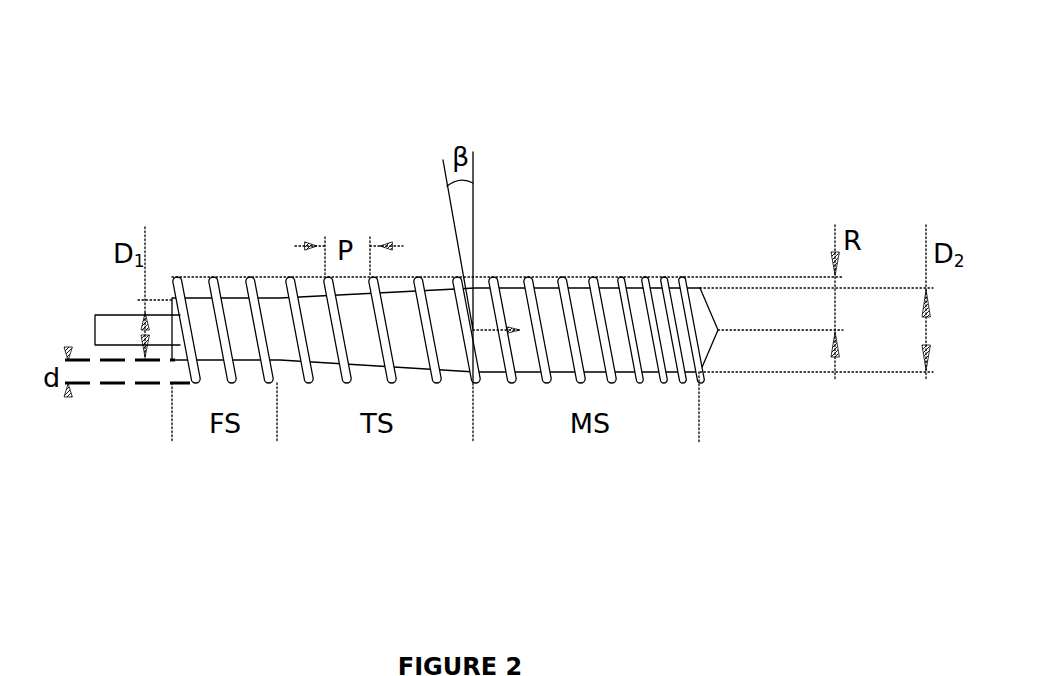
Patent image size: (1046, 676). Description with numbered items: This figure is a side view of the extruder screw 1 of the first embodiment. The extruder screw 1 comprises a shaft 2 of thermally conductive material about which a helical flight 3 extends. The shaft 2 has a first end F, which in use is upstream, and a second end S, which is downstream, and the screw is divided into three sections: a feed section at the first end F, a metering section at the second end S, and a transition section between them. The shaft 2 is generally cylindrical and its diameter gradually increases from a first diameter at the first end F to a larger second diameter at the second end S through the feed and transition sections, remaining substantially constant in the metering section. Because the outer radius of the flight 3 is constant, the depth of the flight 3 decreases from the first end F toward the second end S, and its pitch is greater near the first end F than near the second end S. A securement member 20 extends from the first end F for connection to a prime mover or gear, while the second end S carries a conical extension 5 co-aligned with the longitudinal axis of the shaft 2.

The extruder screw 1 is at (536, 260).
The shaft 2 is at (578, 300).
The helical flight 3 is at (283, 288).
The conical extension 5 is at (716, 338).
The securement member 20 is at (100, 322).
The second end S is at (717, 208).
The first end F is at (113, 219).